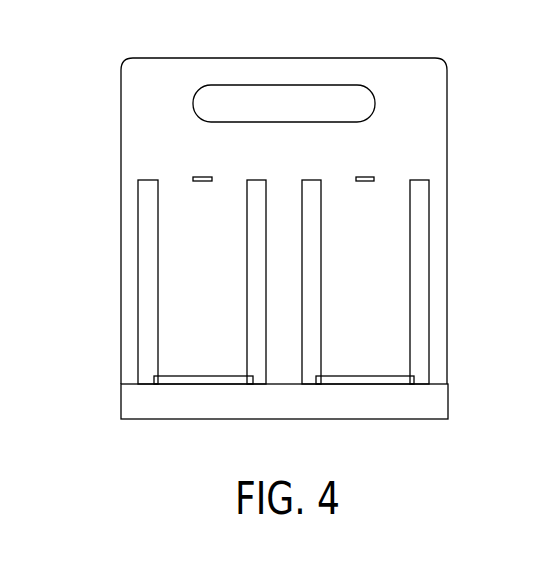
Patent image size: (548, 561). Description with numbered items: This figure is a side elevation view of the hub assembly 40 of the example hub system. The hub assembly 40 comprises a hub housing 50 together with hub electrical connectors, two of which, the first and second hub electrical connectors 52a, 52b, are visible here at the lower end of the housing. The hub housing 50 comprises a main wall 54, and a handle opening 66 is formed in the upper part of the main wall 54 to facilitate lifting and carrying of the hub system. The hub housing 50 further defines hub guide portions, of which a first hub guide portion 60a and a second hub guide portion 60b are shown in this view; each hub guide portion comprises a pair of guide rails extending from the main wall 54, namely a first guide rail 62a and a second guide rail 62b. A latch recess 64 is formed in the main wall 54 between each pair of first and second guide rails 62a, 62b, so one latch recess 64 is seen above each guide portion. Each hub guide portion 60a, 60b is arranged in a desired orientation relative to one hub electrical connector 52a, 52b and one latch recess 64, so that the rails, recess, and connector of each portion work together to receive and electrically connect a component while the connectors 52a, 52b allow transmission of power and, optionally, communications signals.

The hub assembly 40 is at (273, 212).
The hub housing 50 is at (283, 238).
The main wall 54 is at (435, 100).
The handle opening 66 is at (292, 95).
The latch recess 64 is at (205, 176).
The first hub guide portion 60a is at (397, 258).
The second hub guide portion 60b is at (180, 258).
The first guide rail 62a is at (255, 242).
The second guide rail 62b is at (148, 275).
The first hub electrical connector 52a is at (369, 340).
The second hub electrical connector 52b is at (206, 340).